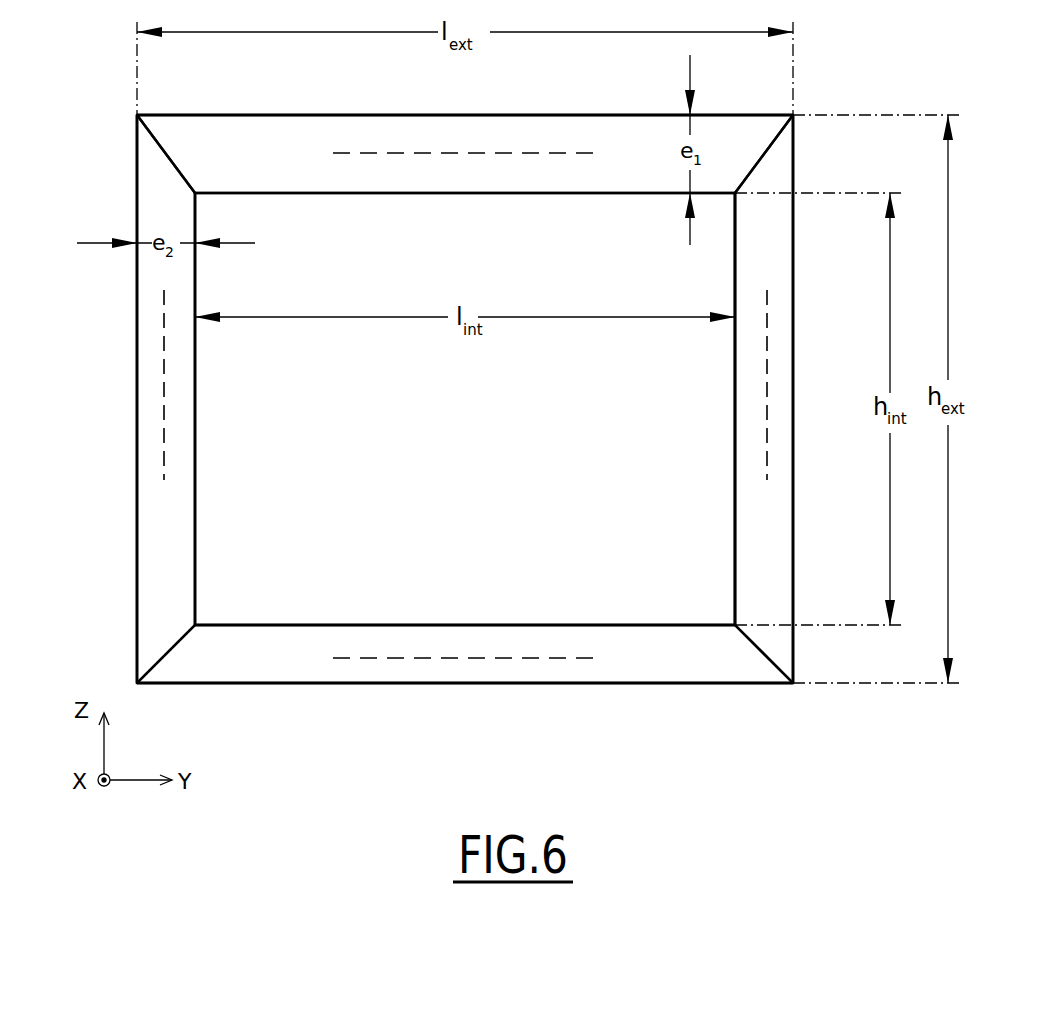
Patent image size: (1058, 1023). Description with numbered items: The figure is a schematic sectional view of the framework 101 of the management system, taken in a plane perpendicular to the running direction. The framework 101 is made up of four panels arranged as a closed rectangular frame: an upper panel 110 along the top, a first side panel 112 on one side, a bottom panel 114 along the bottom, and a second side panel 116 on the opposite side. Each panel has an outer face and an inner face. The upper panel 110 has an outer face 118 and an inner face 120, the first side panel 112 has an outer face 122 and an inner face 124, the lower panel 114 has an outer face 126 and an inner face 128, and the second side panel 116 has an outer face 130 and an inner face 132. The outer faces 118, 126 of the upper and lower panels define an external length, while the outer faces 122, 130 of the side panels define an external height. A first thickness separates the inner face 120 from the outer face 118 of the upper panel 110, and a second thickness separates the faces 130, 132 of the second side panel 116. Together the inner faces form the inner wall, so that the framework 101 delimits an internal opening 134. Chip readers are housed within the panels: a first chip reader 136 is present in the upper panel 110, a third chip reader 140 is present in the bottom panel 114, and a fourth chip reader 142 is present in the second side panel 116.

The framework 101 is at (248, 135).
The upper panel 110 is at (762, 125).
The first side panel 112 is at (778, 516).
The bottom panel 114 is at (703, 660).
The second side panel 116 is at (160, 528).
The outer face 118 is at (555, 115).
The inner face 120 is at (478, 195).
The outer face 122 is at (795, 335).
The inner face 124 is at (735, 388).
The outer face 126 is at (617, 683).
The inner face 128 is at (585, 625).
The outer face 130 is at (137, 308).
The inner face 132 is at (195, 382).
The internal opening 134 is at (703, 565).
The first chip reader 136 is at (368, 150).
The third chip reader 140 is at (455, 658).
The fourth chip reader 142 is at (164, 434).